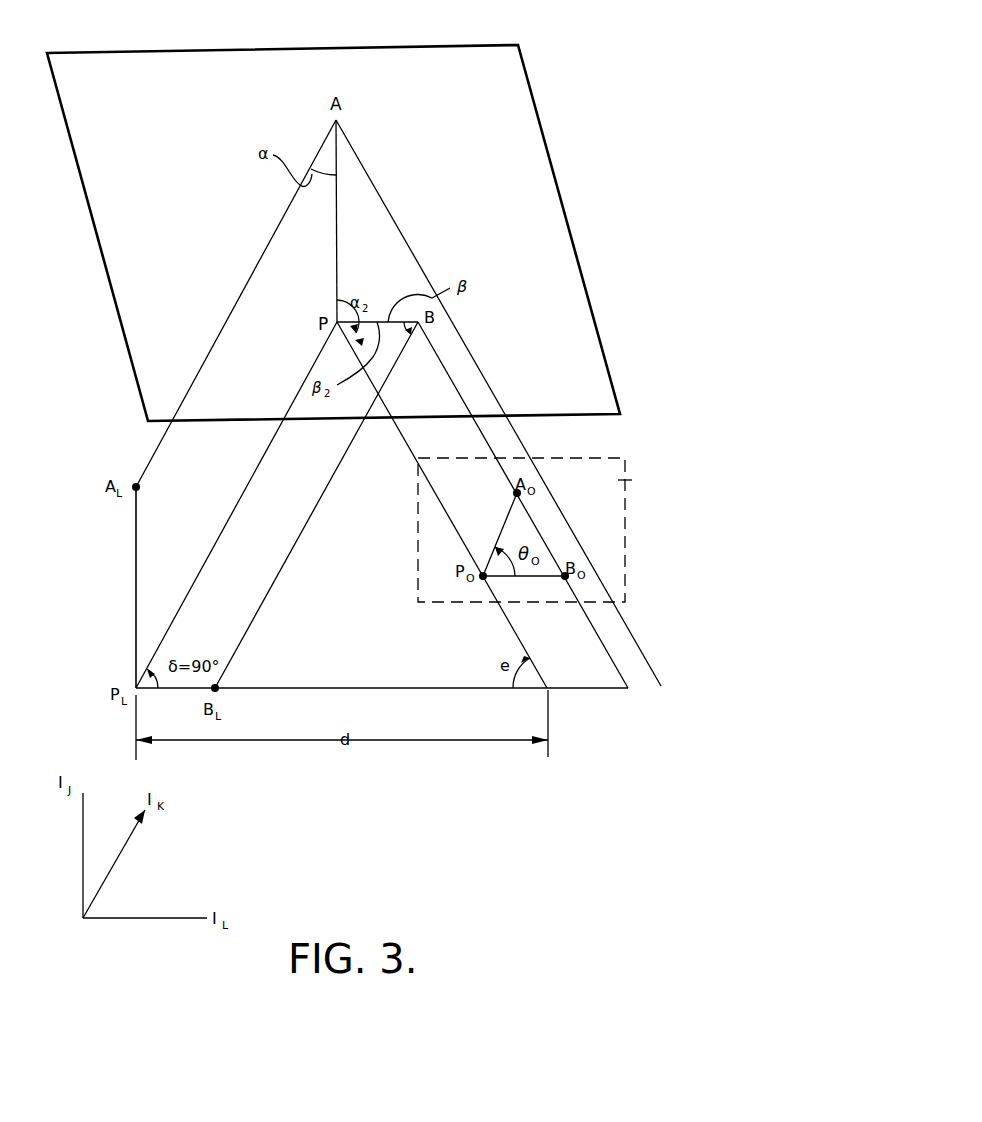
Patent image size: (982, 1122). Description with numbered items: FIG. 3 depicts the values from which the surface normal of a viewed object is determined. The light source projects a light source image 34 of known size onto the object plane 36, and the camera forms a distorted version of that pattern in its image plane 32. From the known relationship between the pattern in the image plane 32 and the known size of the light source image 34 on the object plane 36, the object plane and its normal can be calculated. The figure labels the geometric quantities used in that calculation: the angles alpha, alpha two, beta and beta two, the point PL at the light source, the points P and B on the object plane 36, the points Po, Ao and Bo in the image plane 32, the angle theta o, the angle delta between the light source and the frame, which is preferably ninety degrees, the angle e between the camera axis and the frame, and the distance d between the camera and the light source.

The image plane 32 is at (645, 468).
The light source image 34 is at (137, 584).
The object plane 36 is at (577, 260).